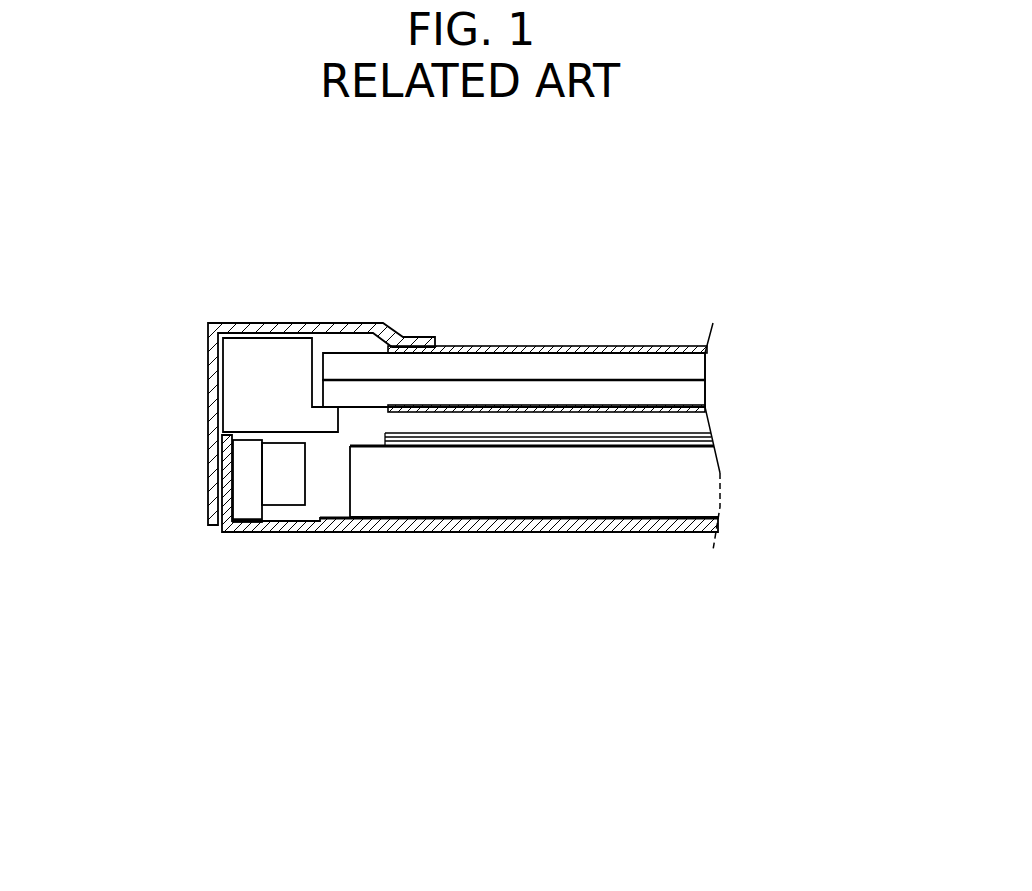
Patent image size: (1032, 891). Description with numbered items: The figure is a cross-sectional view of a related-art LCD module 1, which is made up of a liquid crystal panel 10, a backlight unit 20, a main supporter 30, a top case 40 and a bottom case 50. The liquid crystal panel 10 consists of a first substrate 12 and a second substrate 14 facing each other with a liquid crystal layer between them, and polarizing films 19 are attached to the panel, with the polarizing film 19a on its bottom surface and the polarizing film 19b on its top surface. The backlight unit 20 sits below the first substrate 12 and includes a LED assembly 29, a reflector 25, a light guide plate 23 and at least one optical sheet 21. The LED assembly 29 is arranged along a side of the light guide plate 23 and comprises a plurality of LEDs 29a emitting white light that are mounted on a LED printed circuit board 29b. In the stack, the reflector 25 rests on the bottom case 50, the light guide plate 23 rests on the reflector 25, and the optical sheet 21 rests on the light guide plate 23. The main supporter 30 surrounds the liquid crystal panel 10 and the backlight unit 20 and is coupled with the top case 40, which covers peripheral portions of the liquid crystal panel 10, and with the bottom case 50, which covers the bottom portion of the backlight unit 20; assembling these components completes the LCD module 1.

The LCD module 1 is at (684, 211).
The liquid crystal panel 10 is at (848, 372).
The first substrate 12 is at (697, 392).
The second substrate 14 is at (692, 365).
The polarizing films 19 is at (607, 257).
The polarizing film 19a is at (588, 405).
The polarizing film 19b is at (518, 346).
The backlight unit 20 is at (297, 710).
The optical sheet 21 is at (533, 462).
The light guide plate 23 is at (477, 490).
The reflector 25 is at (402, 519).
The LED assembly 29 is at (263, 665).
The LEDs 29a is at (285, 493).
The LED printed circuit board 29b is at (245, 508).
The main supporter 30 is at (250, 393).
The top case 40 is at (293, 323).
The bottom case 50 is at (672, 528).